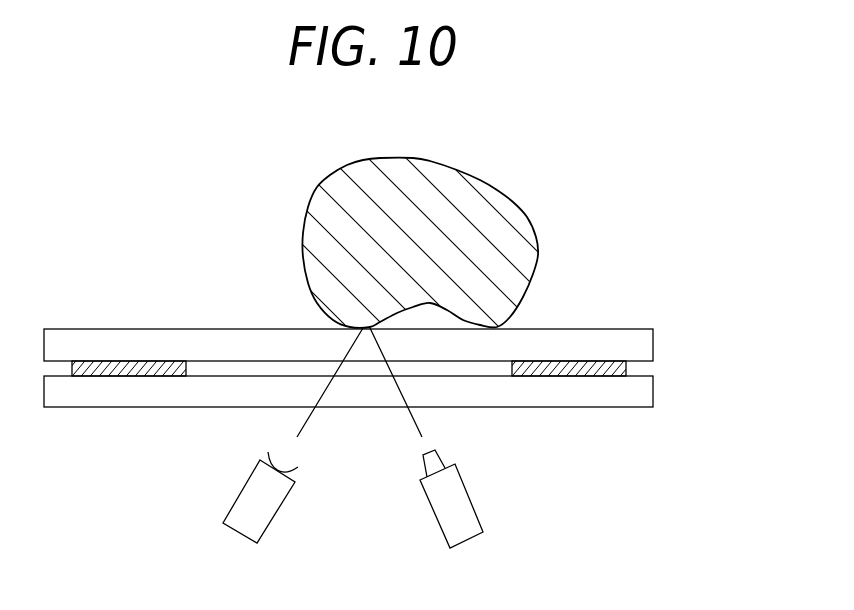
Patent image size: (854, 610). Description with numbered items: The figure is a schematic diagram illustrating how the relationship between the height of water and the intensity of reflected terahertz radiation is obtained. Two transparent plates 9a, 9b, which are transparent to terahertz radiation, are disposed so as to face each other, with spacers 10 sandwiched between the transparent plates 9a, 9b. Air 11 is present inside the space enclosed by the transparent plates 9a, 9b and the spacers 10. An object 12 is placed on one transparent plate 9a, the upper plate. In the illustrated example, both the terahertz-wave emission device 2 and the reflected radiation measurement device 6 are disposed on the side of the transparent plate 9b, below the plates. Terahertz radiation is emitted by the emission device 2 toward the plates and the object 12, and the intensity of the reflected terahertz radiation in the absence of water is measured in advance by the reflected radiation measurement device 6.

The object 12 is at (510, 215).
The transparent plate 9a is at (640, 349).
The transparent plate 9b is at (640, 392).
The air 11 is at (237, 370).
The spacers 10 is at (577, 370).
The reflected radiation measurement device 6 is at (262, 507).
The terahertz-wave emission device 2 is at (463, 507).